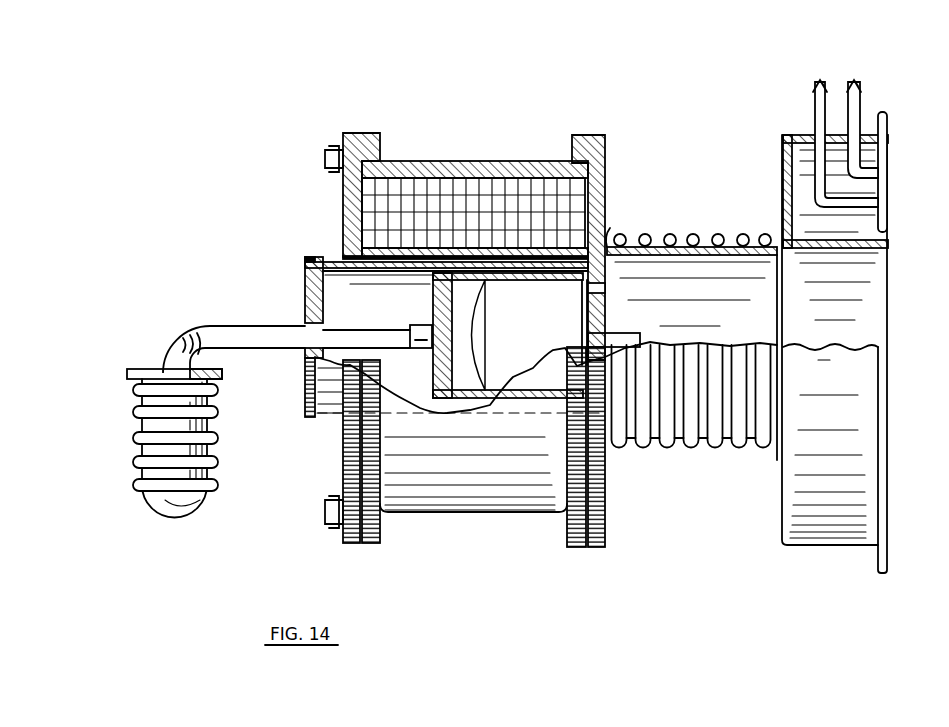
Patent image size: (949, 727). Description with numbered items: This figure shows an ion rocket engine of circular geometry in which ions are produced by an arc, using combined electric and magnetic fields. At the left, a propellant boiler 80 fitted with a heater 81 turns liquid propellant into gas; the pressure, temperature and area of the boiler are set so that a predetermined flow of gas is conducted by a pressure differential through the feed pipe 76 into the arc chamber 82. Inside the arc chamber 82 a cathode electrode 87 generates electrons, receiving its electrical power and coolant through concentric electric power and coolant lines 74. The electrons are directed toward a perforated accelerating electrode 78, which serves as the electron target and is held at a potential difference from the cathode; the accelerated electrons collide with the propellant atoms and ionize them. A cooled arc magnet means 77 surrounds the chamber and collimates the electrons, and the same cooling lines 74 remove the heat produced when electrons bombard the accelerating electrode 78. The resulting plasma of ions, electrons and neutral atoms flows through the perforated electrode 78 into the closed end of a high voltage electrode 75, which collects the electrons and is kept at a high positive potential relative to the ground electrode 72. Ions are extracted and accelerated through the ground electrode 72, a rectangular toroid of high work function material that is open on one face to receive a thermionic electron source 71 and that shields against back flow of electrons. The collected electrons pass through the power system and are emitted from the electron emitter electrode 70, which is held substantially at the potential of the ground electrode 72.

The electron emitter electrode 70 is at (883, 182).
The thermionic electron source 71 is at (856, 90).
The ground electrode 72 is at (848, 507).
The concentric electric power and coolant lines 74 is at (766, 250).
The high voltage electrode 75 is at (710, 247).
The pipe 76 is at (370, 337).
The cooled arc magnet means 77 is at (485, 502).
The perforated accelerating electrode 78 is at (606, 306).
The propellant boiler 80 is at (187, 497).
The heater 81 is at (140, 436).
The arc chamber 82 is at (533, 339).
The cathode electrode 87 is at (482, 308).